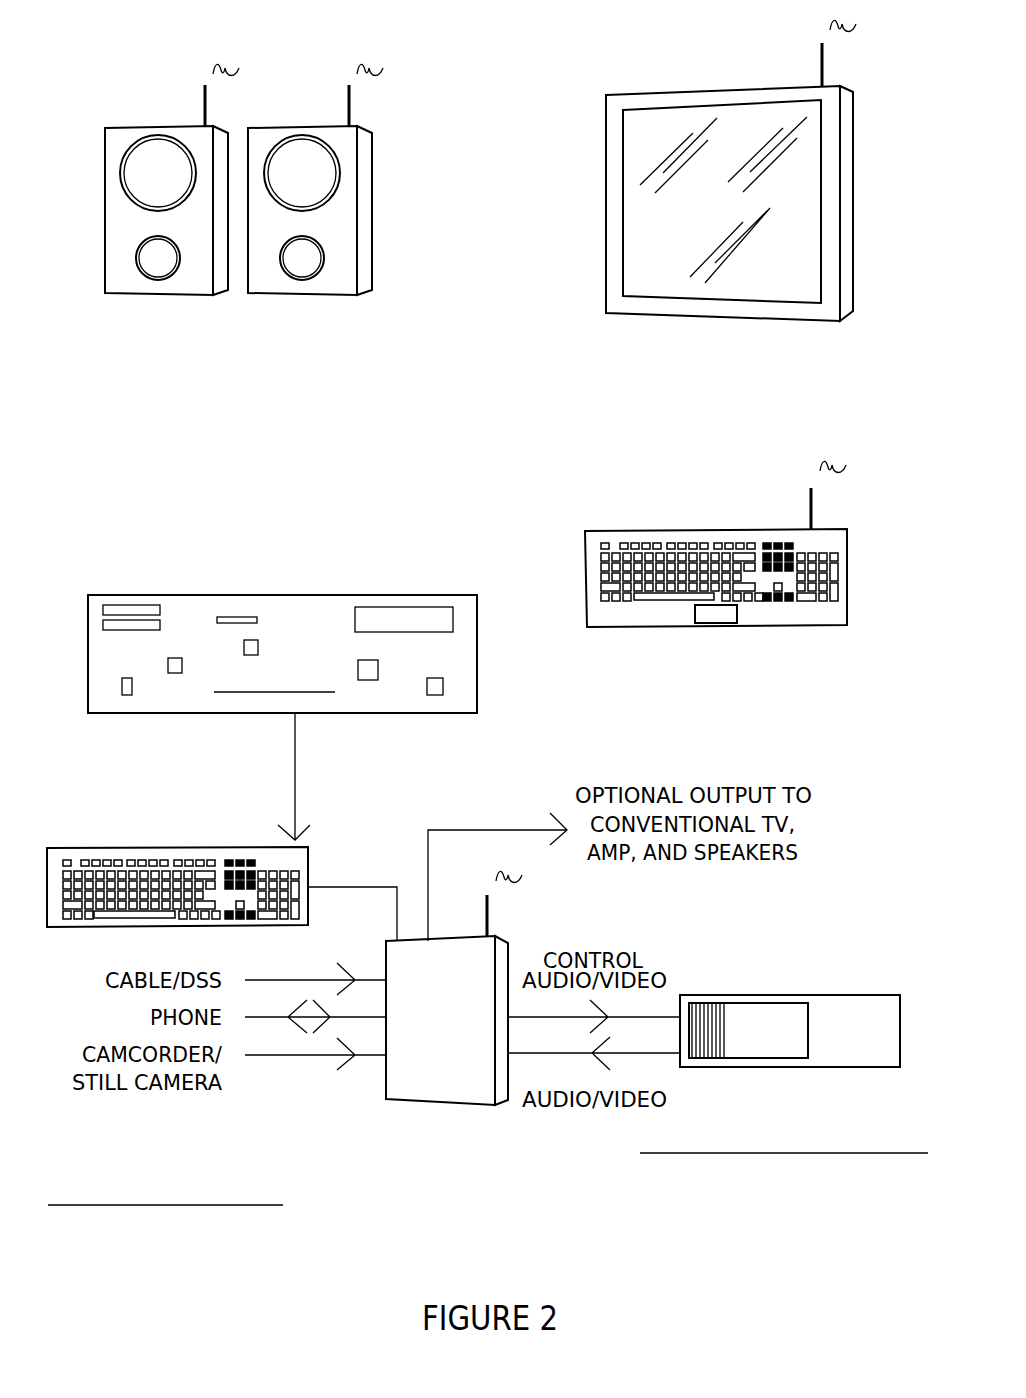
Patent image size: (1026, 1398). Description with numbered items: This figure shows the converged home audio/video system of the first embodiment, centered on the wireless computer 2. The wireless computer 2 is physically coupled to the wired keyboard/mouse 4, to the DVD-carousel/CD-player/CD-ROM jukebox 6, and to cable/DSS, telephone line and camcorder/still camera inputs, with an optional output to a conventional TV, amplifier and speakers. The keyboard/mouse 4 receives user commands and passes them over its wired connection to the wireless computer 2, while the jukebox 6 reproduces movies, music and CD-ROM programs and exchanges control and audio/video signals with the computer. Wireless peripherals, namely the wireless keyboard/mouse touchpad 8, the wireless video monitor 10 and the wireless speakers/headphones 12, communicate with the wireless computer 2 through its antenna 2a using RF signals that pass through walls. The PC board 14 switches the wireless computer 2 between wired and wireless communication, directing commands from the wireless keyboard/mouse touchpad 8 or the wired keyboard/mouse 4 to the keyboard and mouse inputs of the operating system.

The wireless computer 2 is at (451, 1030).
The antenna 2a is at (492, 927).
The keyboard/mouse 4 is at (161, 803).
The DVD-carousel/CD-player/CD-ROM jukebox 6 is at (794, 972).
The wireless keyboard/mouse touchpad 8 is at (585, 532).
The wireless video monitor 10 is at (606, 97).
The wireless speakers/headphones 12 is at (284, 30).
The PC board 14 is at (378, 565).